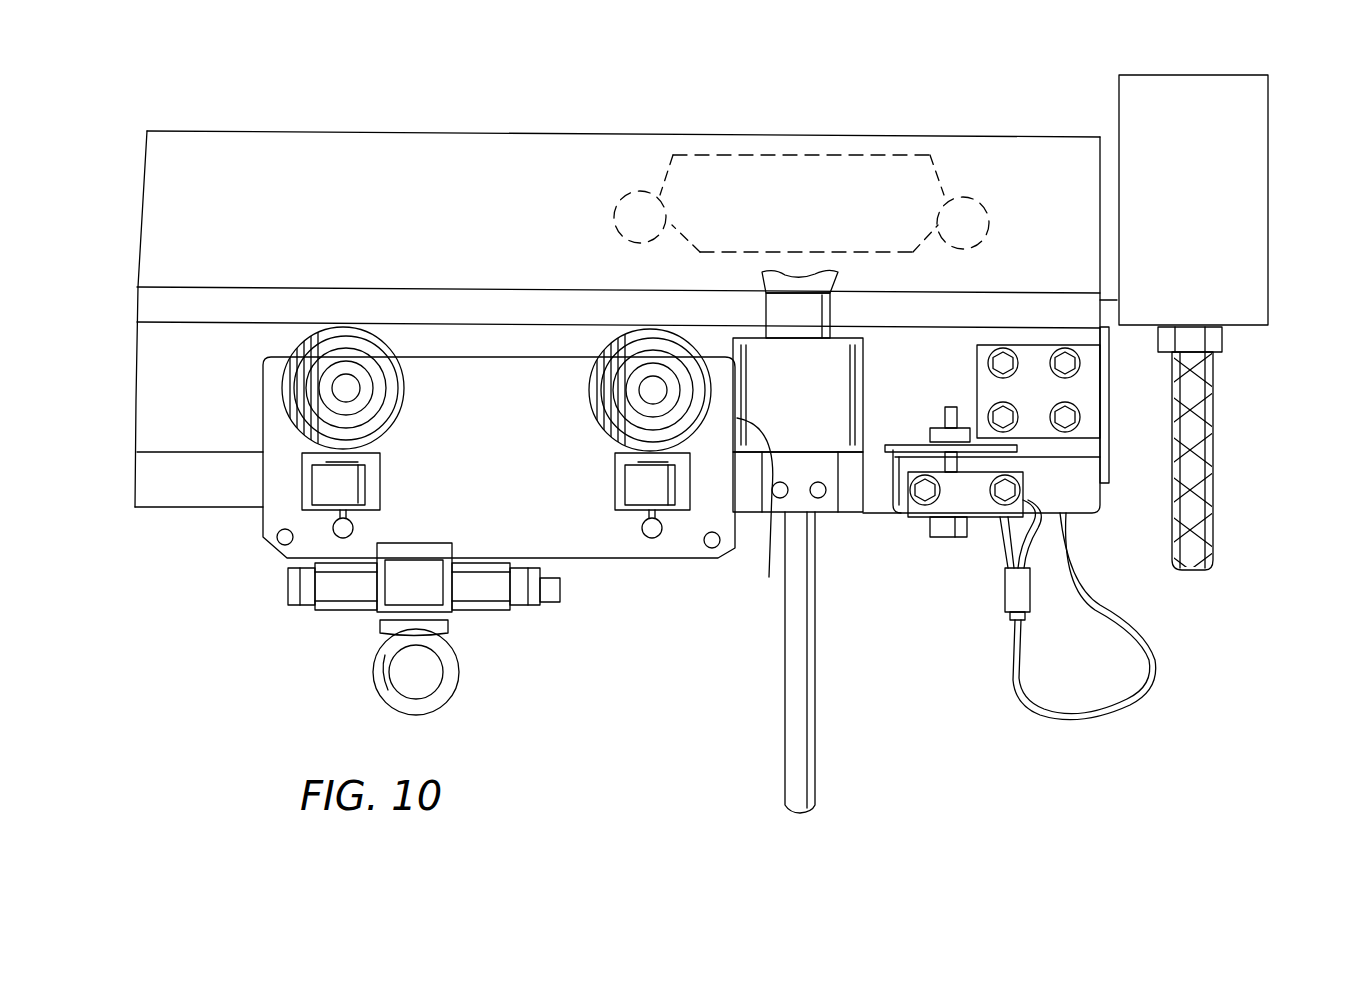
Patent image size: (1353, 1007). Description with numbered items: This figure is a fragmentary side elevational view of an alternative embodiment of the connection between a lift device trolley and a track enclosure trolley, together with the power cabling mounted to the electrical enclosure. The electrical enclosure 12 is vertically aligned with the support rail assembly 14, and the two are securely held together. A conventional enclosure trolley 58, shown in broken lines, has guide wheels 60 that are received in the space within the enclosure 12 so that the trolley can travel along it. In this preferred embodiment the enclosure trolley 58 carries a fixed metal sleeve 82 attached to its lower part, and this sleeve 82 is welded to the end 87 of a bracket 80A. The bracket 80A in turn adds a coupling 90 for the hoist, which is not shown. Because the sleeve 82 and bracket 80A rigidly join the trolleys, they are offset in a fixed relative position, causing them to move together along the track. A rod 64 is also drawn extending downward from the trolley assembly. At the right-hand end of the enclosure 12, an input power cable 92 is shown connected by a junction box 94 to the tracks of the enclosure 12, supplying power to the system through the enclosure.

The electrical enclosure 12 is at (338, 142).
The support rail assembly 14 is at (200, 436).
The enclosure trolley 58 is at (722, 194).
The guide wheels 60 is at (620, 197).
The rod 64 is at (812, 683).
The bracket 80A is at (581, 538).
The fixed metal sleeve 82 is at (845, 400).
The end of bracket 87 is at (760, 516).
The coupling 90 is at (456, 606).
The input power cable 92 is at (1200, 457).
The junction box 94 is at (1250, 213).